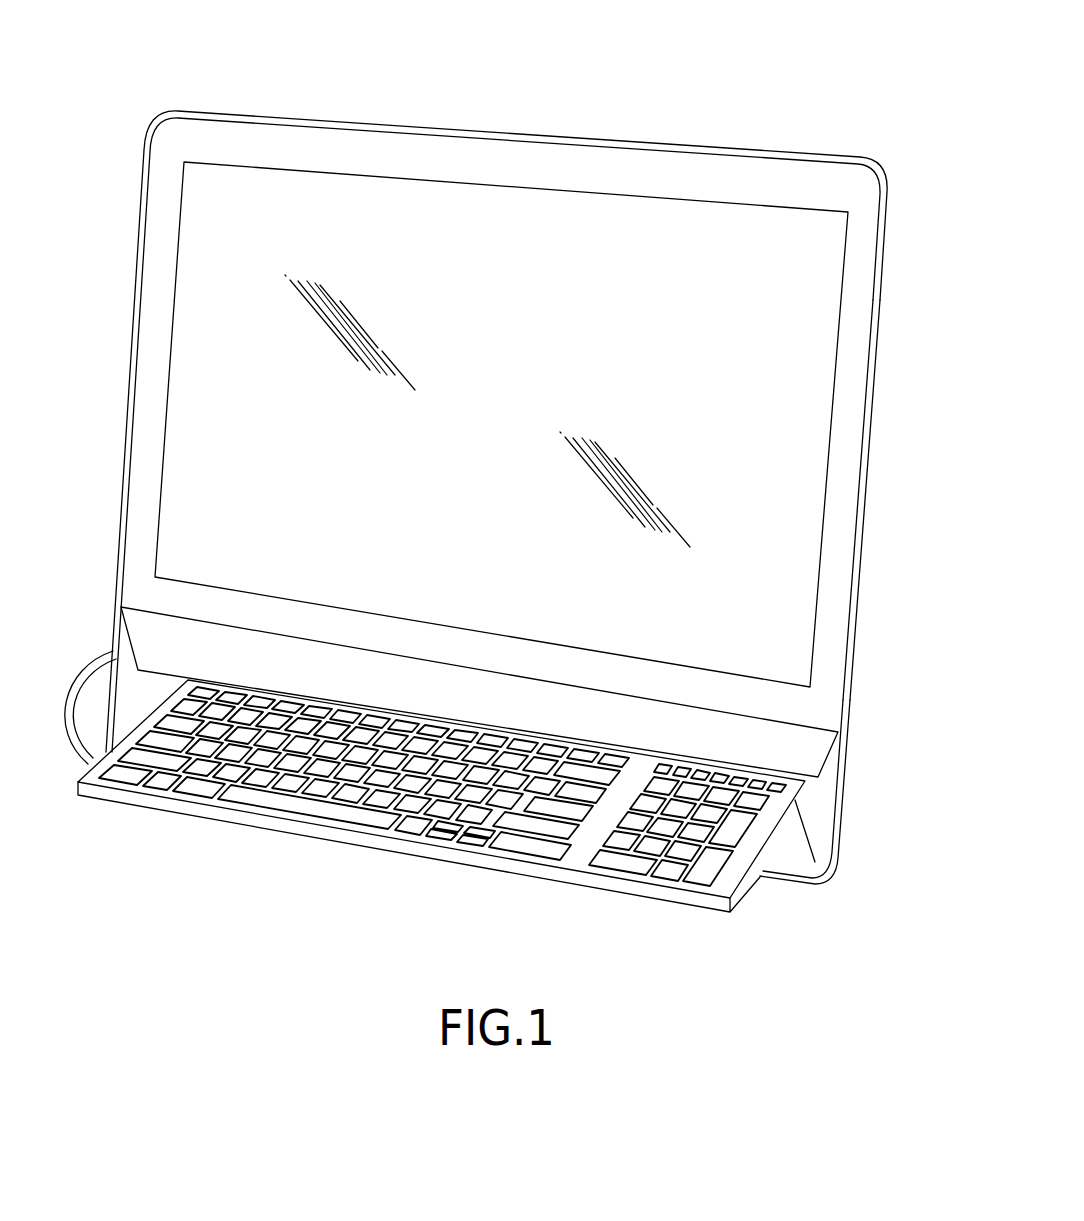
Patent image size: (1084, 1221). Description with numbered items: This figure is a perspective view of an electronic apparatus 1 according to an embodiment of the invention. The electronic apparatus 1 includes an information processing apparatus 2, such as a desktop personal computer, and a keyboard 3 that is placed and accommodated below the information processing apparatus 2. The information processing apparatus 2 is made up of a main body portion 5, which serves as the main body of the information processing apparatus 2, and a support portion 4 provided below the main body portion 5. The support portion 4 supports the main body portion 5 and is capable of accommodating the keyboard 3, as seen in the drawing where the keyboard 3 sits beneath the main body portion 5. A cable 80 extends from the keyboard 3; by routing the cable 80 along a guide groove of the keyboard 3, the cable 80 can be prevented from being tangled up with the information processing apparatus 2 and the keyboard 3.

The electronic apparatus 1 is at (527, 451).
The information processing apparatus 2 is at (818, 150).
The keyboard 3 is at (360, 852).
The support portion 4 is at (848, 787).
The main body portion 5 is at (867, 471).
The cable 80 is at (62, 676).